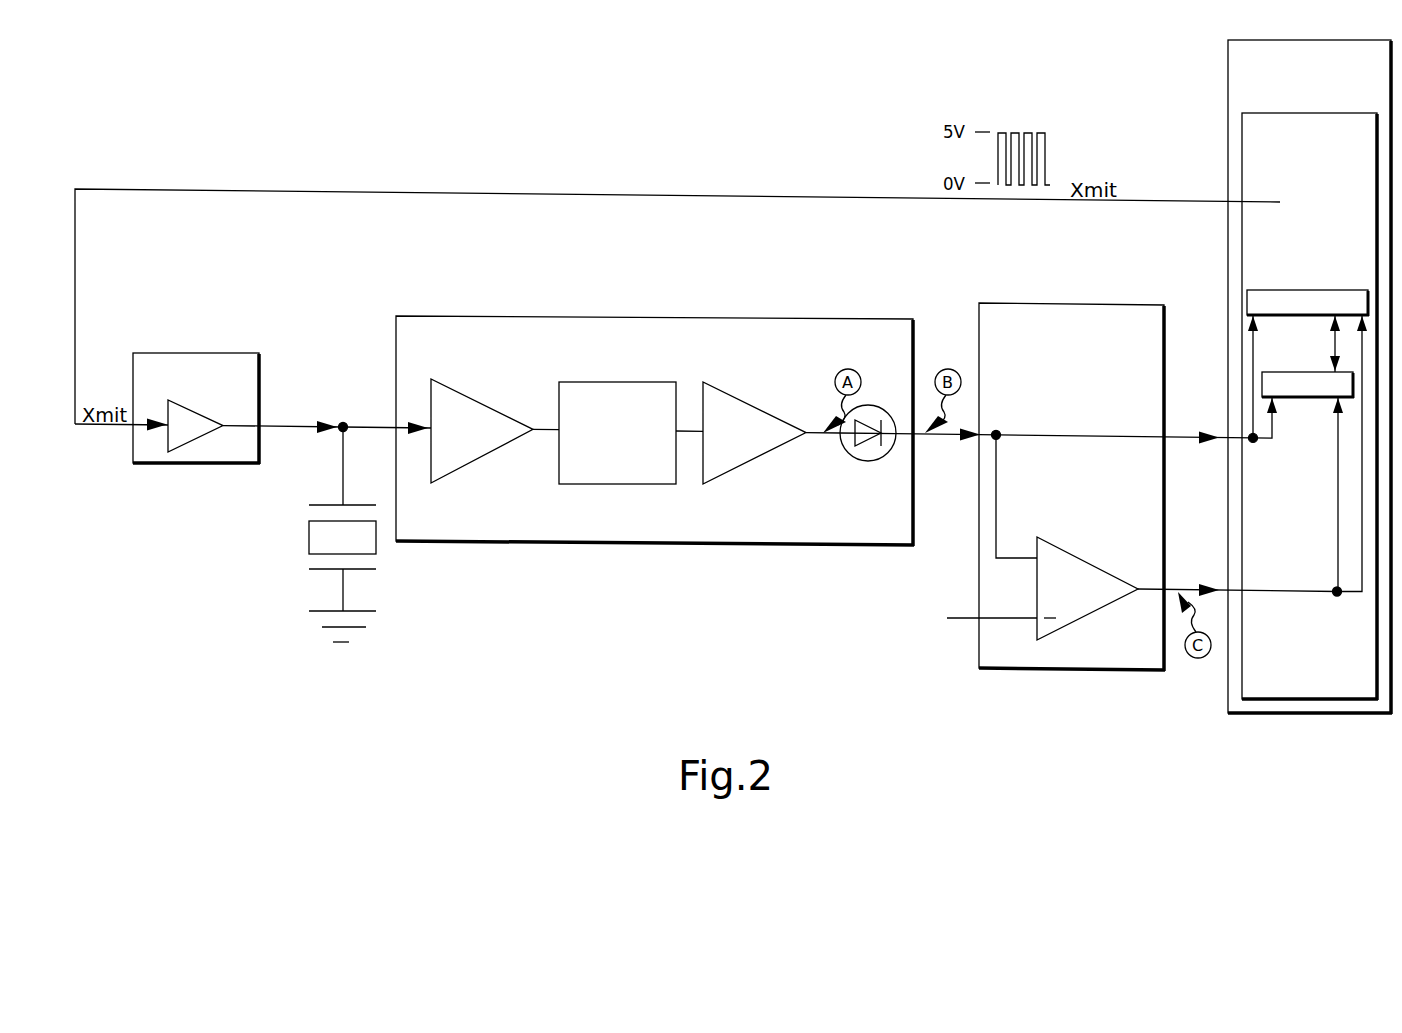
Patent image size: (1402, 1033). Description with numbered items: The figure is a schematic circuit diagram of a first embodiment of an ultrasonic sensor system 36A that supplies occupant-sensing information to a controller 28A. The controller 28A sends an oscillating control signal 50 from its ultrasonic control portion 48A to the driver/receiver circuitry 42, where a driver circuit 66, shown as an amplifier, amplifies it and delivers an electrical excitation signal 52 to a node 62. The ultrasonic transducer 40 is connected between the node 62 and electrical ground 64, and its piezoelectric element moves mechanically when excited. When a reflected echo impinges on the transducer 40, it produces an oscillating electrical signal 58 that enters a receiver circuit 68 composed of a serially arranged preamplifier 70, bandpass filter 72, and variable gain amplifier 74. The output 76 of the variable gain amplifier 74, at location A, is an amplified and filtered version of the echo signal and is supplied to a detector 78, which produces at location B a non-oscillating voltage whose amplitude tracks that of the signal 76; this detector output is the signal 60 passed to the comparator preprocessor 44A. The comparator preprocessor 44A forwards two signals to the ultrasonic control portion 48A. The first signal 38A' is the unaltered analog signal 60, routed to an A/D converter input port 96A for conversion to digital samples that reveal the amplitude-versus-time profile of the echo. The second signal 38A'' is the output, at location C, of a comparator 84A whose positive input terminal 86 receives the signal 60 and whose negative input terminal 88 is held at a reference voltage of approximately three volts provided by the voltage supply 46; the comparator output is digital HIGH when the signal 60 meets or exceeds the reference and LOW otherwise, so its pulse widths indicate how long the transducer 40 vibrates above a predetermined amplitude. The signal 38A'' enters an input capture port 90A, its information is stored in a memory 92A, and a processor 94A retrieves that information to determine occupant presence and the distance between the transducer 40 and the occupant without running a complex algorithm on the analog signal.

The controller 28A is at (1232, 76).
The ultrasonic sensor system 36A is at (736, 89).
The first output signal 38A' is at (1208, 458).
The second output signal 38A'' is at (1237, 571).
The ultrasonic transducer 40 is at (292, 570).
The driver/receiver circuitry 42 is at (165, 305).
The comparator preprocessor 44A is at (1152, 304).
The voltage supply 46 is at (913, 655).
The ultrasonic control portion 48A is at (1330, 116).
The control signal 50 is at (303, 192).
The electrical excitation signal 52 is at (304, 424).
The oscillating electrical signal 58 is at (385, 427).
The output signal 60 is at (943, 442).
The node 62 is at (343, 418).
The electrical ground 64 is at (358, 629).
The driver circuit 66 is at (245, 357).
The receiver circuit 68 is at (583, 317).
The preamplifier 70 is at (463, 404).
The bandpass filter 72 is at (584, 390).
The variable gain amplifier 74 is at (749, 408).
The output of the variable gain amplifier 76 is at (811, 440).
The detector 78 is at (890, 512).
The comparator 84A is at (1078, 562).
The positive input terminal 86 is at (1036, 556).
The negative input terminal 88 is at (1030, 618).
The input capture port 90A is at (1247, 590).
The memory 92A is at (1325, 370).
The processor 94A is at (1318, 290).
The A/D converter input port 96A is at (1247, 443).